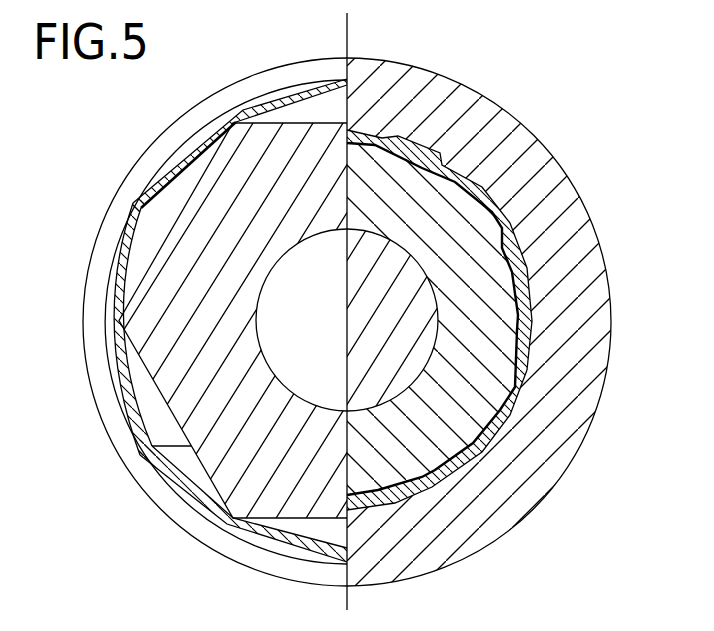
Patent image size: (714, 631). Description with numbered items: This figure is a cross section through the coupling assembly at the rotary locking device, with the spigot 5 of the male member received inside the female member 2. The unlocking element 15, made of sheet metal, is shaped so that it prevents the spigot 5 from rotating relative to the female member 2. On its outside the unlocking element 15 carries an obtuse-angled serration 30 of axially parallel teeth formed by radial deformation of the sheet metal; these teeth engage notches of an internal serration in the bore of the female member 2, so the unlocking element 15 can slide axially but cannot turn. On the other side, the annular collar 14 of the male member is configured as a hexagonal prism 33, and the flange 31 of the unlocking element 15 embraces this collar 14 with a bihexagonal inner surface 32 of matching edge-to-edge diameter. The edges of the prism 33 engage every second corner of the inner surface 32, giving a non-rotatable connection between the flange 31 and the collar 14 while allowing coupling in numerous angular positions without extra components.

The female member 2 is at (573, 217).
The spigot 5 is at (497, 267).
The annular collar 14 is at (165, 384).
The unlocking element 15 is at (520, 385).
The serration 30 is at (483, 192).
The flange 31 is at (172, 175).
The inner surface 32 is at (148, 245).
The hexagonal prism 33 is at (157, 447).